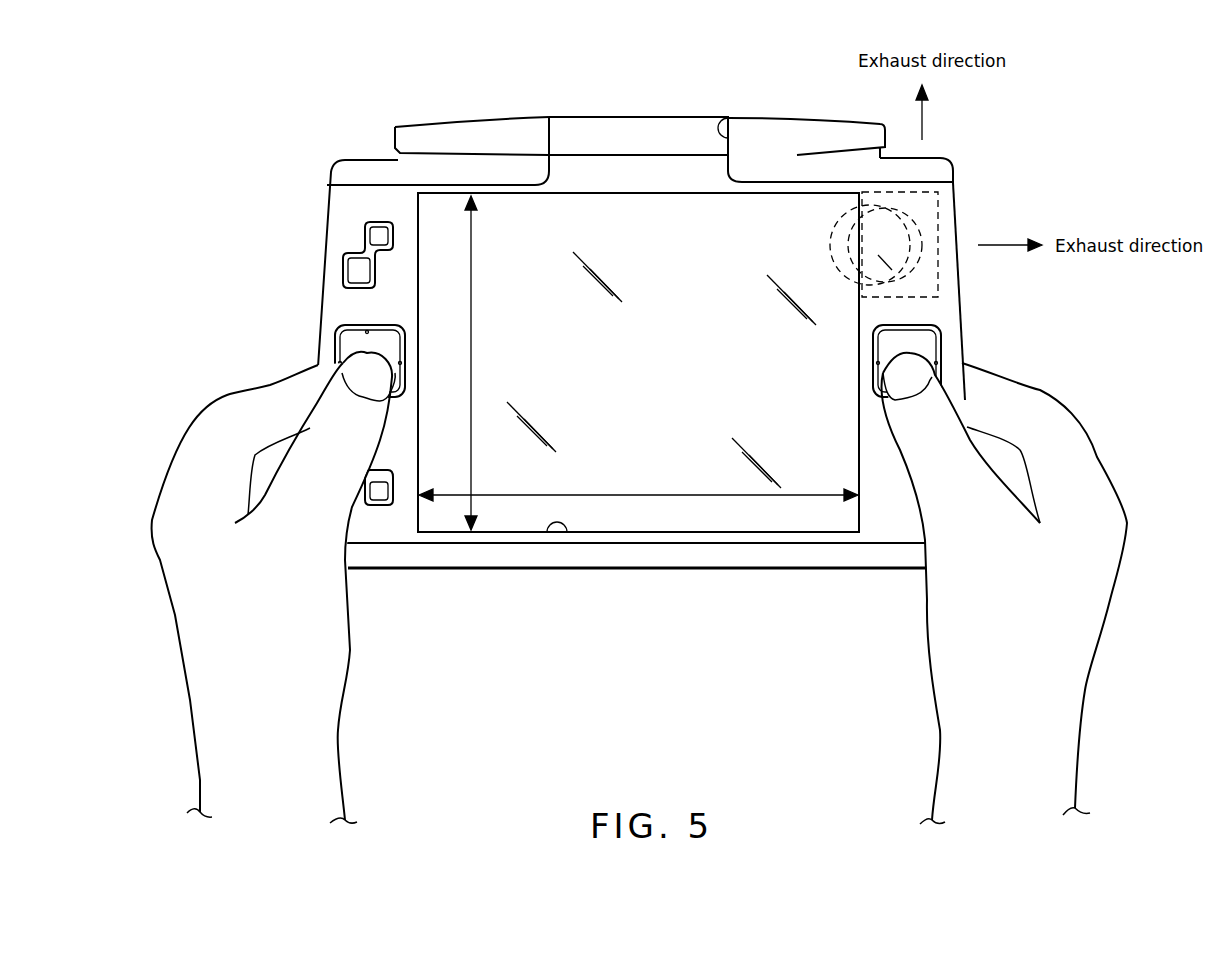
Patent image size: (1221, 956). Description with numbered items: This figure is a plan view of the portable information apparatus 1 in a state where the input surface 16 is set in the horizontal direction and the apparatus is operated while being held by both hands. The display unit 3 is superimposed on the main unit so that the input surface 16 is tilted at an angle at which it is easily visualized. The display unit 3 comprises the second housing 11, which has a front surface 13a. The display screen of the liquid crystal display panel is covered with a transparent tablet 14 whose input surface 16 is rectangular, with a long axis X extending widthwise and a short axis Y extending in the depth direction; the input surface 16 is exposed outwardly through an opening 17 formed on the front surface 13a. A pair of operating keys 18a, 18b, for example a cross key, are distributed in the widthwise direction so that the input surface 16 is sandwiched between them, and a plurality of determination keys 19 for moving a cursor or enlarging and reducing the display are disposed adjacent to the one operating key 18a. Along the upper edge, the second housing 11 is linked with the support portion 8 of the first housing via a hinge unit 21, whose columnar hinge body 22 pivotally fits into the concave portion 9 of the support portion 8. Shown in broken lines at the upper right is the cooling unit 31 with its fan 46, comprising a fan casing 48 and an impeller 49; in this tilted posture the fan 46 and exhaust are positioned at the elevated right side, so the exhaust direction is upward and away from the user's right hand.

The portable information apparatus 1 is at (310, 108).
The display unit 3 is at (316, 194).
The support portion 8 is at (800, 135).
The concave portion 9 is at (718, 118).
The second housing 11 is at (457, 557).
The front surface 13a is at (885, 518).
The tablet 14 is at (514, 220).
The input surface 16 is at (661, 370).
The opening 17 is at (567, 532).
The operating key 18a is at (355, 345).
The operating key 18b is at (925, 345).
The determination keys 19 is at (360, 268).
The hinge unit 21 is at (672, 103).
The hinge body 22 is at (598, 133).
The cooling unit 31 is at (835, 232).
The fan 46 is at (925, 210).
The fan casing 48 is at (925, 282).
The impeller 49 is at (885, 262).